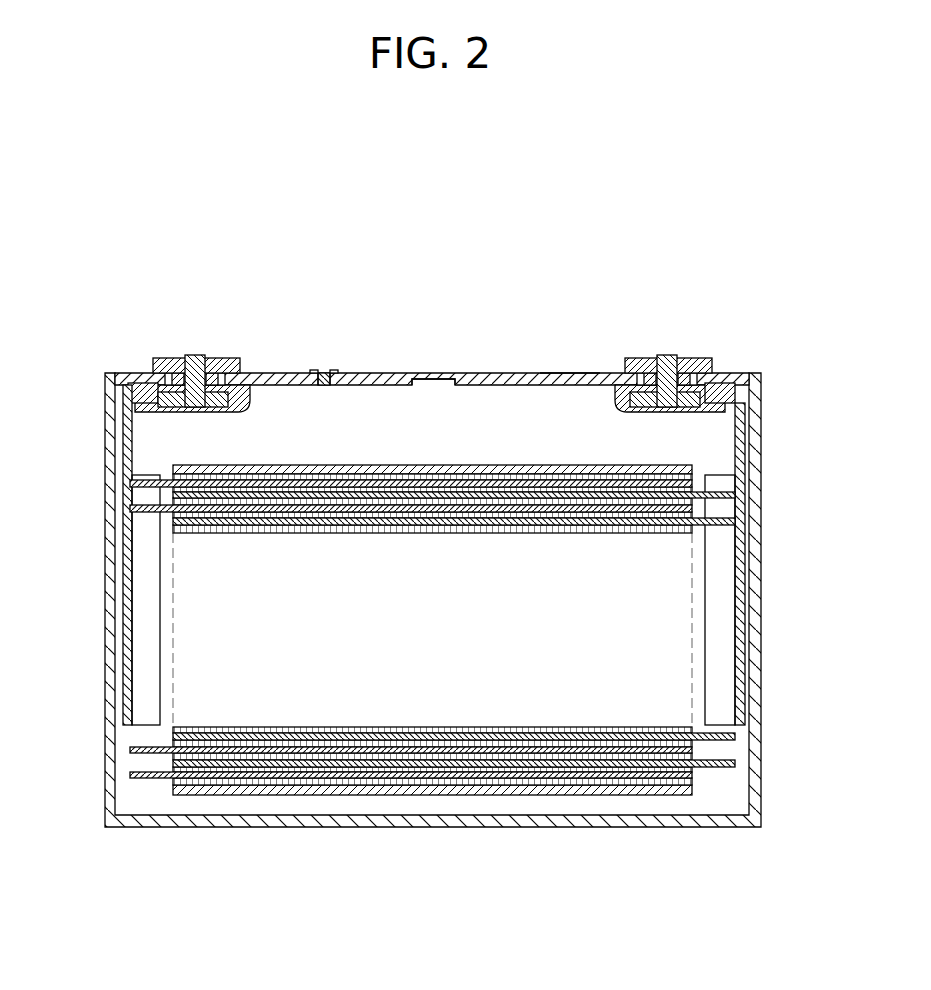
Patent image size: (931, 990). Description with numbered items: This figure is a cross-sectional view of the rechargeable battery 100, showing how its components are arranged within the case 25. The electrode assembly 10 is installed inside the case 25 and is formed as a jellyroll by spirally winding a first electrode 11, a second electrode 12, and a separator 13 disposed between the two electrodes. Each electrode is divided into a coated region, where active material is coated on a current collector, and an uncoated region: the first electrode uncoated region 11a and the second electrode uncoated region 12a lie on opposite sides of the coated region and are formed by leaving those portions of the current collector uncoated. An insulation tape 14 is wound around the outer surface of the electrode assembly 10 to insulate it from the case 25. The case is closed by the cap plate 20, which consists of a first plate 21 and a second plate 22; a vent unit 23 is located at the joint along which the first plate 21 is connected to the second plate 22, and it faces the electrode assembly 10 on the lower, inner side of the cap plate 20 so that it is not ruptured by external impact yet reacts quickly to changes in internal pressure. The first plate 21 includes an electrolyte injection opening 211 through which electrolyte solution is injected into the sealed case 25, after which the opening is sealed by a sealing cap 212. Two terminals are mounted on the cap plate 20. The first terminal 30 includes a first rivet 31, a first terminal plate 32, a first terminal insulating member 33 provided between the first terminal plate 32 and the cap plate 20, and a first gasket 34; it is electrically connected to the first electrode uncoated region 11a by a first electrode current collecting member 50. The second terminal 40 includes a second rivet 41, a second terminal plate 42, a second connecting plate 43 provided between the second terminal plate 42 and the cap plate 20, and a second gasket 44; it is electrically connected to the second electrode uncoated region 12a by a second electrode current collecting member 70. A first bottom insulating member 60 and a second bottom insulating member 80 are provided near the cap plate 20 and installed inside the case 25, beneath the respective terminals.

The rechargeable battery 100 is at (459, 203).
The electrode assembly 10 is at (430, 655).
The first electrode 11 is at (230, 779).
The first electrode uncoated region 11a is at (147, 779).
The second electrode 12 is at (303, 779).
The second electrode uncoated region 12a is at (707, 768).
The separator 13 is at (435, 758).
The insulation tape 14 is at (570, 466).
The cap plate 20 is at (432, 377).
The first plate 21 is at (380, 372).
The second plate 22 is at (560, 372).
The vent unit 23 is at (432, 399).
The electrolyte injection opening 211 is at (325, 386).
The sealing cap 212 is at (325, 369).
The case 25 is at (762, 672).
The first terminal 30 is at (169, 332).
The first rivet 31 is at (193, 351).
The first terminal plate 32 is at (228, 358).
The first terminal insulating member 33 is at (262, 374).
The first gasket 34 is at (163, 358).
The second terminal 40 is at (719, 332).
The second rivet 41 is at (665, 351).
The second terminal plate 42 is at (706, 358).
The second connecting plate 43 is at (724, 374).
The second gasket 44 is at (640, 358).
The first electrode current collecting member 50 is at (110, 494).
The first bottom insulating member 60 is at (112, 394).
The second electrode current collecting member 70 is at (756, 540).
The second bottom insulating member 80 is at (756, 393).